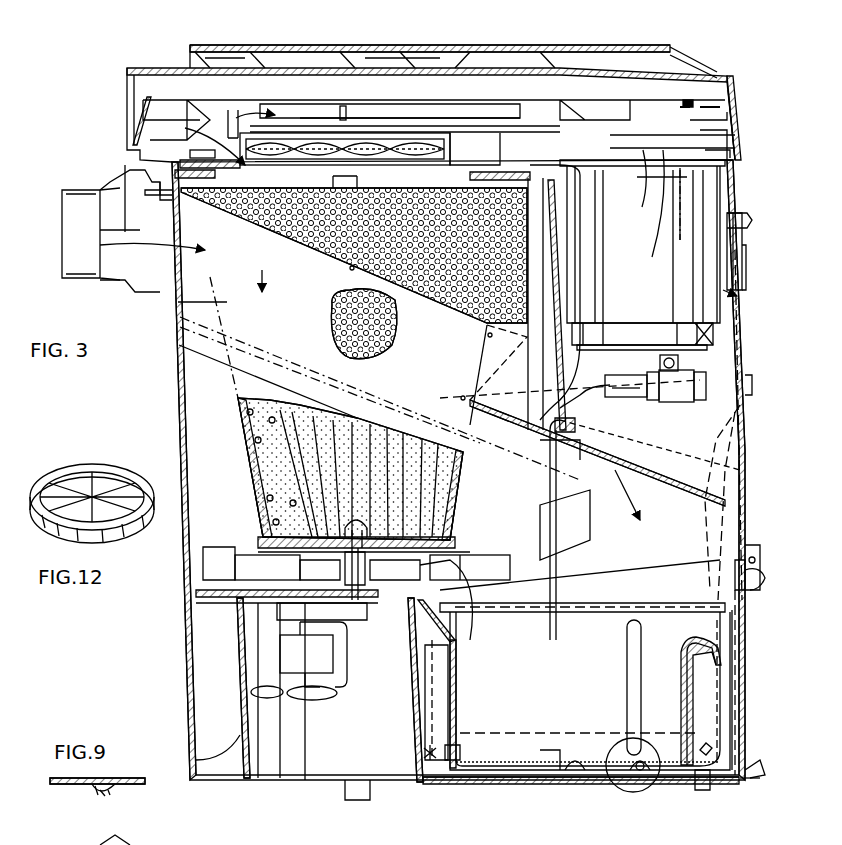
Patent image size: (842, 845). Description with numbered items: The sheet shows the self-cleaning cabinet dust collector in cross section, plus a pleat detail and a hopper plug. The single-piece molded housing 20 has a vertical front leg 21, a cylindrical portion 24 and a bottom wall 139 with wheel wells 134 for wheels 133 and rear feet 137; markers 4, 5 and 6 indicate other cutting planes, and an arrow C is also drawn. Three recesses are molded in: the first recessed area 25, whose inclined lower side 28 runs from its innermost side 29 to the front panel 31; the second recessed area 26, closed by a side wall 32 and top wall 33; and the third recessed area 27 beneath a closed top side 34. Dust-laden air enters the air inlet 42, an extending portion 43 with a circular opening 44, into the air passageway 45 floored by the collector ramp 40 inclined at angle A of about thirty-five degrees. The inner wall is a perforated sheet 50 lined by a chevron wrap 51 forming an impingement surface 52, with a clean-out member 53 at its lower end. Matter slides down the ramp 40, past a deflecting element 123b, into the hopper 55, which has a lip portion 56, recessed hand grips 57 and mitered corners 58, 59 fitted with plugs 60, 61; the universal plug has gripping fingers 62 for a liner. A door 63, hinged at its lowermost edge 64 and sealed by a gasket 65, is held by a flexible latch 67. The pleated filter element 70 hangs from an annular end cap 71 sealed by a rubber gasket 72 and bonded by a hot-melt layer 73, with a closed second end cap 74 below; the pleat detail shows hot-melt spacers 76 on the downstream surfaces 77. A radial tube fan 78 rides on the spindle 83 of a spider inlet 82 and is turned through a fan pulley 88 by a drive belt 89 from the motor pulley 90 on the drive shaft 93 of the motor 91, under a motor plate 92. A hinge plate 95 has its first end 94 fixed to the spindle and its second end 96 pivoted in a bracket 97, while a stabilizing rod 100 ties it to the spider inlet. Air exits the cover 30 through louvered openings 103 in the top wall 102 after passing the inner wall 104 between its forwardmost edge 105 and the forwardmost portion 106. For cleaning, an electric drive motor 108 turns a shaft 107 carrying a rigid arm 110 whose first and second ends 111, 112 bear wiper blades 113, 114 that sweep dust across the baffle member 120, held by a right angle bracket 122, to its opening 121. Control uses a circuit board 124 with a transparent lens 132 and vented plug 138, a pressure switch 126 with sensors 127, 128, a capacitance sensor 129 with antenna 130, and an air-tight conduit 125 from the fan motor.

In FIG. 3, the section line 4- 4 is at (245, 103).
In FIG. 3, the section line 5- 5 is at (140, 226).
In FIG. 3, the section line 6- 6 is at (270, 545).
In FIG. 3, the housing 20 is at (170, 388).
In FIG. 3, the vertical leg 21 is at (752, 405).
In FIG. 3, the cylindrical portion 24 is at (182, 596).
In FIG. 3, the first recessed area 25 is at (745, 298).
In FIG. 3, the second recessed area 26 is at (343, 753).
In FIG. 3, the third recessed area 27 is at (738, 712).
In FIG. 3, the lower side 28 is at (700, 488).
In FIG. 3, the innermost side 29 is at (605, 385).
In FIG. 3, the removable cover 30 is at (702, 60).
In FIG. 3, the front panel 31 is at (748, 350).
In FIG. 3, the side wall 32 is at (412, 725).
In FIG. 3, the top wall 33 is at (362, 605).
In FIG. 3, the top side 34 is at (748, 545).
In FIG. 3, the collector ramp 40 is at (203, 355).
In FIG. 3, the air inlet 42 is at (104, 170).
In FIG. 3, the outwardly and rearwardly extending portion 43 is at (118, 282).
In FIG. 3, the circular opening 44 is at (85, 248).
In FIG. 3, the air passageway 45 is at (163, 266).
In FIG. 3, the perforated sheet 50 is at (530, 255).
In FIG. 3, the chevron wrap 51 is at (200, 300).
In FIG. 3, the impingement surface 52 is at (182, 245).
In FIG. 3, the clean-out member 53 is at (470, 372).
In FIG. 3, the hopper 55 is at (705, 634).
In FIG. 3, the lip portion 56 is at (672, 600).
In FIG. 3, the recessed hand grips 57 is at (440, 655).
In FIG. 3, the corner 58 is at (452, 765).
In FIG. 3, the corner 59 is at (703, 788).
In FIG. 3, the plug 60 is at (430, 762).
In FIG. 12, the plug 60 is at (62, 528).
In FIG. 3, the plug 61 is at (720, 752).
In FIG. 12, the fingers 62 is at (88, 480).
In FIG. 3, the door 63 is at (748, 690).
In FIG. 3, the lowermost edge 64 is at (752, 782).
In FIG. 3, the gasket 65 is at (756, 782).
In FIG. 3, the flexible latch 67 is at (765, 559).
In FIG. 3, the filter element 70 is at (240, 410).
In FIG. 3, the annular end cap 71 is at (180, 170).
In FIG. 3, the annular rubber gasket 72 is at (168, 183).
In FIG. 3, the hot-melt layer 73 is at (585, 178).
In FIG. 3, the second end cap 74 is at (455, 545).
In FIG. 9, the hot-melt spacers 76 is at (100, 790).
In FIG. 9, the downstream surfaces 77 is at (130, 786).
In FIG. 3, the fan 78 is at (480, 100).
In FIG. 3, the spider inlet 82 is at (199, 143).
In FIG. 3, the spindle 83 is at (345, 106).
In FIG. 3, the fan pulley 88 is at (305, 135).
In FIG. 3, the drive belt 89 is at (643, 250).
In FIG. 3, the motor pulley 90 is at (700, 113).
In FIG. 3, the motor 91 is at (732, 265).
In FIG. 3, the motor plate 92 is at (712, 158).
In FIG. 3, the drive shaft 93 is at (628, 183).
In FIG. 3, the first end 94 is at (325, 130).
In FIG. 3, the hinge plate 95 is at (505, 122).
In FIG. 3, the second end 96 is at (530, 110).
In FIG. 3, the bracket 97 is at (640, 110).
In FIG. 3, the stabilizing rod 100 is at (520, 172).
In FIG. 3, the top wall 102 is at (222, 44).
In FIG. 3, the louvered openings 103 is at (200, 62).
In FIG. 3, the inner wall 104 is at (430, 128).
In FIG. 3, the forwardmost edge 105 is at (575, 103).
In FIG. 3, the forwardmost portion 106 is at (736, 75).
In FIG. 3, the shaft 107 is at (340, 660).
In FIG. 3, the electric drive motor 108 is at (330, 698).
In FIG. 3, the rigid arm 110 is at (330, 595).
In FIG. 3, the first end 111 is at (290, 565).
In FIG. 3, the second end 112 is at (456, 608).
In FIG. 3, the wiper blade 113 is at (210, 547).
In FIG. 3, the wiper blade 114 is at (485, 560).
In FIG. 3, the baffle member 120 is at (195, 570).
In FIG. 3, the opening 121 is at (620, 585).
In FIG. 3, the right angle bracket 122 is at (718, 562).
In FIG. 3, the deflecting element 123b is at (742, 444).
In FIG. 3, the circuit board 124 is at (742, 270).
In FIG. 3, the air-tight conduit 125 is at (582, 778).
In FIG. 3, the pressure switch 126 is at (580, 430).
In FIG. 3, the sensor 127 is at (580, 460).
In FIG. 3, the second sensor 128 is at (410, 290).
In FIG. 3, the capacitance sensor 129 is at (630, 380).
In FIG. 3, the antenna 130 is at (557, 625).
In FIG. 3, the transparent lens 132 is at (762, 230).
In FIG. 3, the wheels 133 is at (640, 805).
In FIG. 3, the wheel wells 134 is at (655, 790).
In FIG. 3, the feet 137 is at (358, 805).
In FIG. 3, the vented plug 138 is at (767, 374).
In FIG. 3, the bottom wall 139 is at (512, 784).
In FIG. 3, the angle A is at (261, 301).
In FIG. 3, the flow arrow C is at (605, 495).